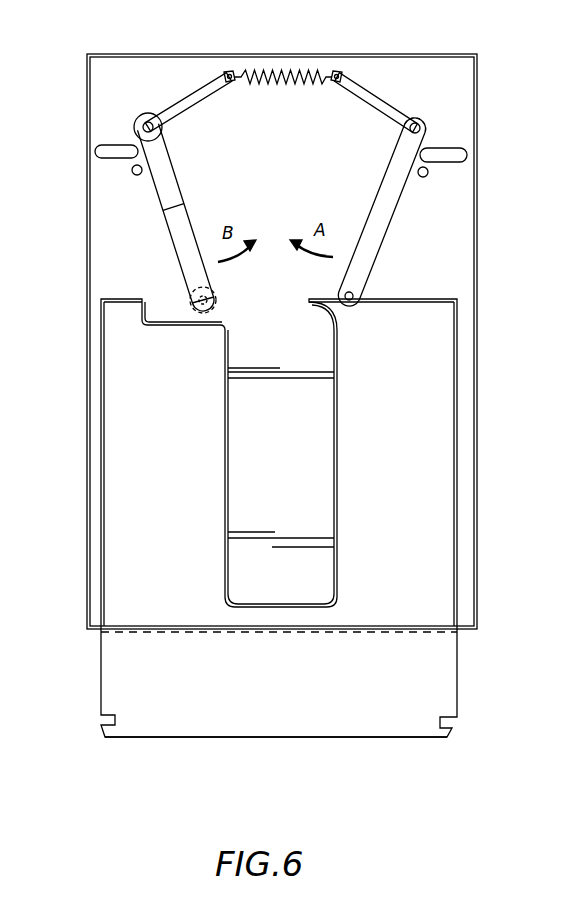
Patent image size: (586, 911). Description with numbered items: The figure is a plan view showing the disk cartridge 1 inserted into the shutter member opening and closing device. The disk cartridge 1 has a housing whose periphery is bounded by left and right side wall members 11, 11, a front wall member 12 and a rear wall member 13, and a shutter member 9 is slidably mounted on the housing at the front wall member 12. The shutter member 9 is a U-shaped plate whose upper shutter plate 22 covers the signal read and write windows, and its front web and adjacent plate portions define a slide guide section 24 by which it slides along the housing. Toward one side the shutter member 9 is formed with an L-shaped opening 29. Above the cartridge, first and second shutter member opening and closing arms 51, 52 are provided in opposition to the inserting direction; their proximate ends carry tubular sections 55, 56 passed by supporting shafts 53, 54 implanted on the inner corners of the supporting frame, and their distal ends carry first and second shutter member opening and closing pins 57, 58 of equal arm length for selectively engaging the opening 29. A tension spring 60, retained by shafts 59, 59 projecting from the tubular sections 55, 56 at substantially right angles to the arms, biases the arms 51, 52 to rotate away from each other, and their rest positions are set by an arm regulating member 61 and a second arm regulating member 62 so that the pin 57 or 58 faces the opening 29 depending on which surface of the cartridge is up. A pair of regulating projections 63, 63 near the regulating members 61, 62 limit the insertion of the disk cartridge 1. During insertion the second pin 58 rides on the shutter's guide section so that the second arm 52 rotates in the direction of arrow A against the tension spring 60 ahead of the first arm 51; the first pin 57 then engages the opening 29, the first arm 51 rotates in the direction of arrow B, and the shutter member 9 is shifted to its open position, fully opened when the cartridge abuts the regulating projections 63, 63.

The disk cartridge 1 is at (447, 404).
The shutter member 9 is at (327, 462).
The side wall member 11 is at (101, 492).
The front wall member 12 is at (400, 300).
The rear wall member 13 is at (275, 738).
The upper shutter plate 22 is at (238, 508).
The slide guide section 24 is at (158, 310).
The opening 29 is at (215, 305).
The first shutter member opening and closing arm 51 is at (172, 180).
The second shutter member opening and closing arm 52 is at (380, 200).
The supporting shaft 53 is at (135, 125).
The supporting shaft 54 is at (418, 124).
The tubular section 55 is at (148, 122).
The tubular section 56 is at (428, 128).
The first shutter member opening and closing pin 57 is at (215, 295).
The second shutter member opening and closing pin 58 is at (345, 295).
The shaft 59 is at (200, 90).
The tension spring 60 is at (272, 77).
The arm regulating member 61 is at (95, 152).
The second arm regulating member 62 is at (463, 155).
The regulating projection 63 is at (132, 172).